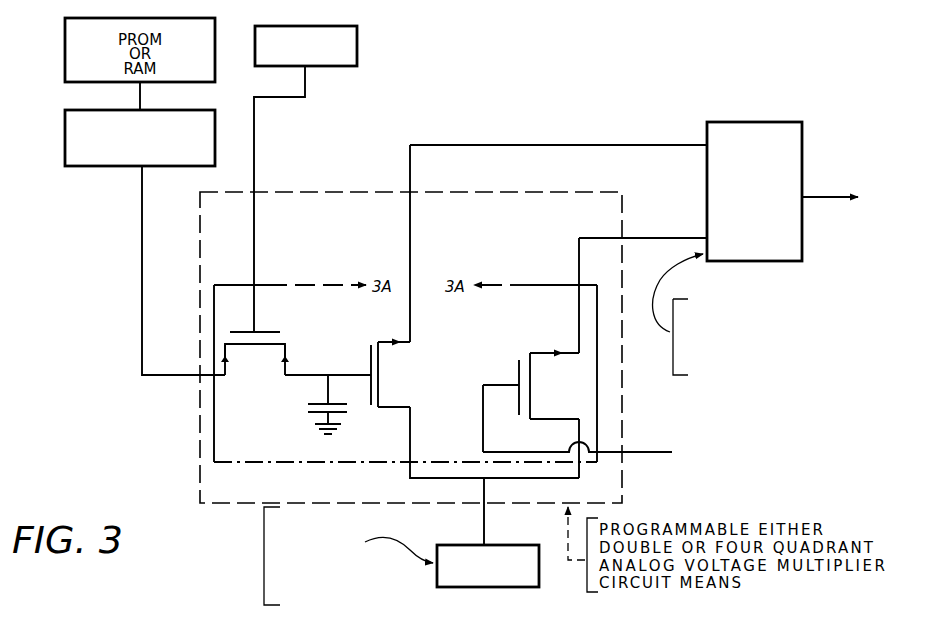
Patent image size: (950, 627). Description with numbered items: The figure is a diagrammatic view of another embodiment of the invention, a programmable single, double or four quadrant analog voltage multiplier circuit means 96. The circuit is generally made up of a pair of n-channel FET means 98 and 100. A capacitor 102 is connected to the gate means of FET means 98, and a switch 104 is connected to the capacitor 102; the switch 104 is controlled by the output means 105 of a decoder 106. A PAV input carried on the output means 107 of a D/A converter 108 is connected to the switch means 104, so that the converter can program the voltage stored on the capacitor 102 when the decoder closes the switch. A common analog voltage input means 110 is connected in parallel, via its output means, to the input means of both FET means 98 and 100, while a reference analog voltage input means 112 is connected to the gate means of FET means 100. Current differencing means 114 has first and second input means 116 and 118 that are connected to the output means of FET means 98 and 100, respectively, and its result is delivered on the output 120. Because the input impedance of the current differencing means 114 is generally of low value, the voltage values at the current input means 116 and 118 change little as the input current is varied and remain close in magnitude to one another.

The programmable either double or four quadrant analog voltage multiplier circuit me 96 is at (196, 412).
The n-channel FET means 98 is at (374, 412).
The n-channel FET means 100 is at (524, 351).
The capacitor 102 is at (328, 388).
The switch 104 is at (289, 339).
The output means of decoder 105 is at (254, 163).
The decoder 106 is at (357, 50).
The output means of D/A converter 107 is at (140, 266).
The D/A converter 108 is at (108, 167).
The common analog voltage input means 110 is at (465, 575).
The reference analog voltage input means 112 is at (642, 452).
The current differencing means 114 is at (732, 208).
The first input means 116 is at (610, 144).
The second input means 118 is at (652, 237).
The output 120 is at (830, 195).